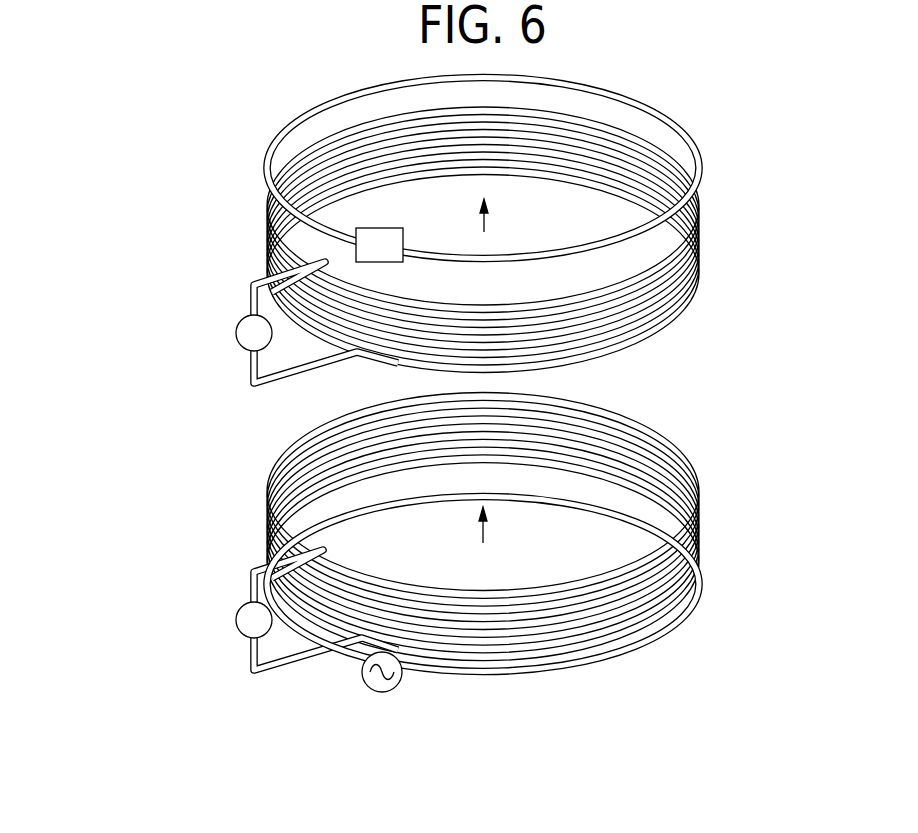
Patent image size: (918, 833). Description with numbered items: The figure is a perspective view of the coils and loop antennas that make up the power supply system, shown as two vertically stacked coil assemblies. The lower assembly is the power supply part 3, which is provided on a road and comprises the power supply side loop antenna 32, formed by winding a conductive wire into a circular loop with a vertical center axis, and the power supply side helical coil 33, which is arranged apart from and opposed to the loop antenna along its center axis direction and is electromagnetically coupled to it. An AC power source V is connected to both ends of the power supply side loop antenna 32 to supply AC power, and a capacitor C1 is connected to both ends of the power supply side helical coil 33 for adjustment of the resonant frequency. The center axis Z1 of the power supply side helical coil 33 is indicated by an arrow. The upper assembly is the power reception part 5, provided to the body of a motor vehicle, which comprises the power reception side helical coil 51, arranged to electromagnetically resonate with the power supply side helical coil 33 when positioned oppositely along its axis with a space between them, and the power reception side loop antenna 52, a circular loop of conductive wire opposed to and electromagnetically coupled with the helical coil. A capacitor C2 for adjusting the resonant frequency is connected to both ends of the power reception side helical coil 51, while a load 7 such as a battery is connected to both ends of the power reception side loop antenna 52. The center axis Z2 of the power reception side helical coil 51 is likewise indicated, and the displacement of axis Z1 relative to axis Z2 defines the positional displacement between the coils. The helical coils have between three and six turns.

The power supply part 3 is at (510, 597).
The power supply side loop antenna 32 is at (703, 600).
The power supply side helical coil 33 is at (703, 527).
The capacitor C1 is at (254, 620).
The AC power source V is at (364, 687).
The center axis of the power supply side helical coil Z1 is at (487, 530).
The power reception part 5 is at (515, 439).
The power reception side helical coil 51 is at (703, 242).
The power reception side loop antenna 52 is at (703, 167).
The capacitor C2 is at (254, 333).
The load 7 is at (381, 227).
The center axis of the power reception side helical coil Z2 is at (488, 222).